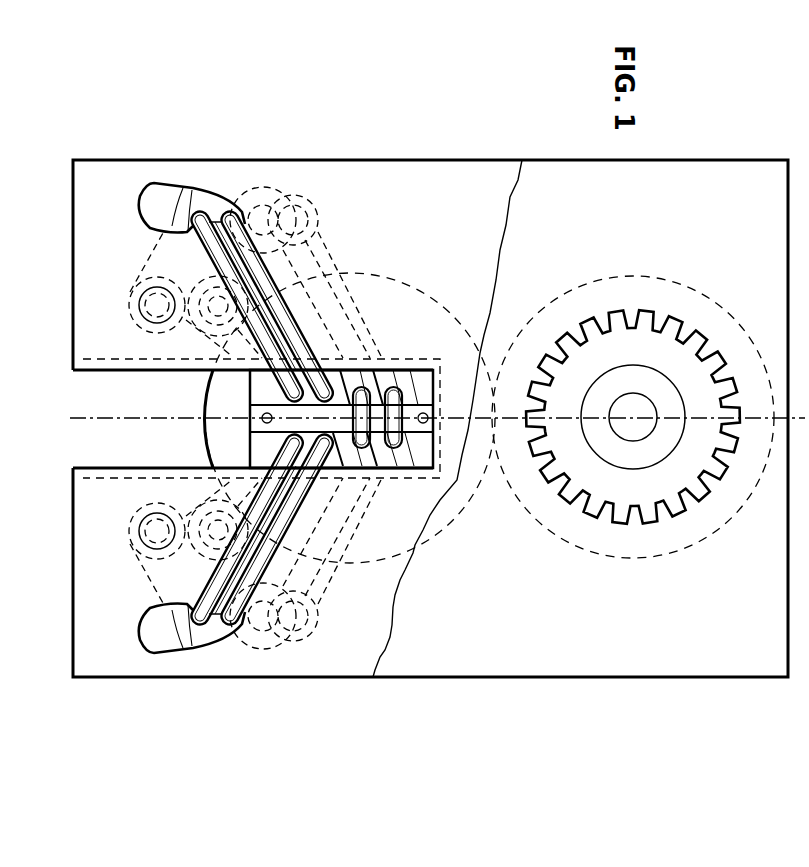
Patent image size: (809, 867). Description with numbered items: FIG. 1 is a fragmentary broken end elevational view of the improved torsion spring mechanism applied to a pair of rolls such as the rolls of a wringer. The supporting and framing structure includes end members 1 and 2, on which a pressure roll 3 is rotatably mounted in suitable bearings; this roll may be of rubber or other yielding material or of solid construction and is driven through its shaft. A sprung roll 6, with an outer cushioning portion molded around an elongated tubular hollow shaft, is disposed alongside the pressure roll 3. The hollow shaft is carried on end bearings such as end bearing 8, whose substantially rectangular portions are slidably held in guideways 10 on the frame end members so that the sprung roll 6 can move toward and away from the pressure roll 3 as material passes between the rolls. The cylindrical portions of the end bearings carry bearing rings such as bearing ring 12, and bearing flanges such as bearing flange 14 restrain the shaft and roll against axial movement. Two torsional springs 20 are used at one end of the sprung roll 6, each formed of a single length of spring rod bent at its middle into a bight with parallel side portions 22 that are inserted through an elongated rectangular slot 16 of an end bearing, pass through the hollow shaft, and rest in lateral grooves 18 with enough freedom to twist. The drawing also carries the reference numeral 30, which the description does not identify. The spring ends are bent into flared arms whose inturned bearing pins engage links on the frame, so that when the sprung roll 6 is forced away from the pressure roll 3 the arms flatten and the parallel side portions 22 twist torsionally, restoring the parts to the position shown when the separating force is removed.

The supporting frame end member 1 is at (500, 677).
The supporting frame end member 2 is at (627, 487).
The pressure roll 3 is at (93, 440).
The sprung roll 6 is at (205, 406).
The end bearing 8 is at (247, 457).
The guideway 10 is at (100, 468).
The bearing ring 12 is at (185, 183).
The bearing flange 14 is at (157, 653).
The elongated rectangular slot 16 is at (412, 525).
The lateral groove 18 is at (405, 398).
The torsional spring 20 is at (242, 227).
The parallel side portion 22 is at (258, 393).
The slide block 30 is at (432, 419).